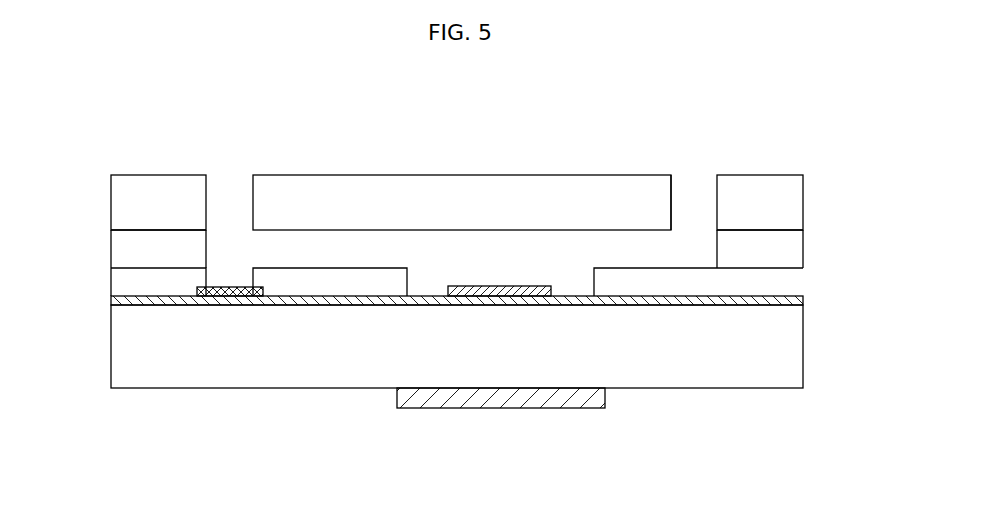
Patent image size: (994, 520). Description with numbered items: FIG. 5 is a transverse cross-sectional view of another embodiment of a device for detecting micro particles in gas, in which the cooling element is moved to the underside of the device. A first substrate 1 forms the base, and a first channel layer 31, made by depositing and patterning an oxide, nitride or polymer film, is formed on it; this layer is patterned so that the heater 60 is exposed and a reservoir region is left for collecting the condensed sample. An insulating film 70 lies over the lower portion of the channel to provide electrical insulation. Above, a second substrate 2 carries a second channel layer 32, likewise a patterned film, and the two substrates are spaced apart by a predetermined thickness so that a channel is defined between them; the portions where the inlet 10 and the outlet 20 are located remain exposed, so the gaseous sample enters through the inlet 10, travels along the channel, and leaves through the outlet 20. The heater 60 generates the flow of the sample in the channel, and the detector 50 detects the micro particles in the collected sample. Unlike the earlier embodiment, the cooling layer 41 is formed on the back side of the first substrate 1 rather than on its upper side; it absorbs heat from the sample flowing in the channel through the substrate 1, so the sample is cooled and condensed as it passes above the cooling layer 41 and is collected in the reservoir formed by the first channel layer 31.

The first substrate 1 is at (778, 347).
The second substrate 2 is at (164, 179).
The inlet 10 is at (695, 189).
The outlet 20 is at (234, 185).
The first channel layer 31 is at (128, 285).
The second channel layer 32 is at (128, 252).
The cooling layer 41 is at (501, 403).
The detector 50 is at (496, 285).
The heater 60 is at (235, 298).
The insulating film 70 is at (798, 299).